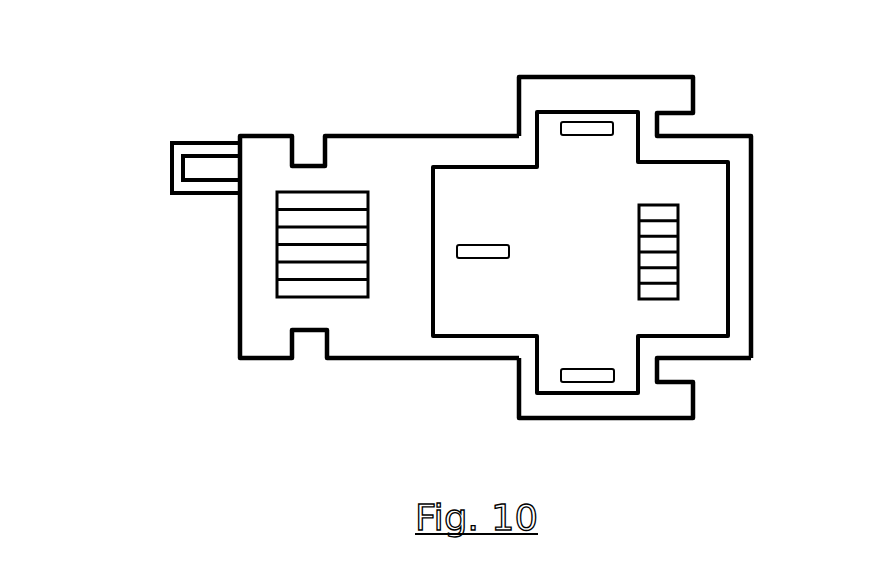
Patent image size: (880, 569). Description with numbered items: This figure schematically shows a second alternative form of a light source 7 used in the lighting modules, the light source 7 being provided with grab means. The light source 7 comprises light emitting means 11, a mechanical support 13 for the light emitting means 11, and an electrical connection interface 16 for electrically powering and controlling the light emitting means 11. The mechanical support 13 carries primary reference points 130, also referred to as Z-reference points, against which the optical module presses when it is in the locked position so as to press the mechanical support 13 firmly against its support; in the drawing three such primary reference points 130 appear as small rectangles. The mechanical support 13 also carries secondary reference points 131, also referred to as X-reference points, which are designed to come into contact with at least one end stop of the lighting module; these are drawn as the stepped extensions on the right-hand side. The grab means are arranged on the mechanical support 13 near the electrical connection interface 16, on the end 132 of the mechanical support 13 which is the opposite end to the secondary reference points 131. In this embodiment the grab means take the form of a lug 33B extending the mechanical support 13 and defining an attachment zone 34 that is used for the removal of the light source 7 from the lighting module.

The light source 7 is at (446, 246).
The light emitting means 11 is at (668, 247).
The mechanical support 13 is at (513, 343).
The electrical connection interface 16 is at (347, 203).
The lug 33B is at (172, 172).
The attachment zone 34 is at (203, 163).
The primary reference points 130 is at (485, 252).
The secondary reference points 131 is at (695, 99).
The end of the mechanical support 132 is at (240, 302).